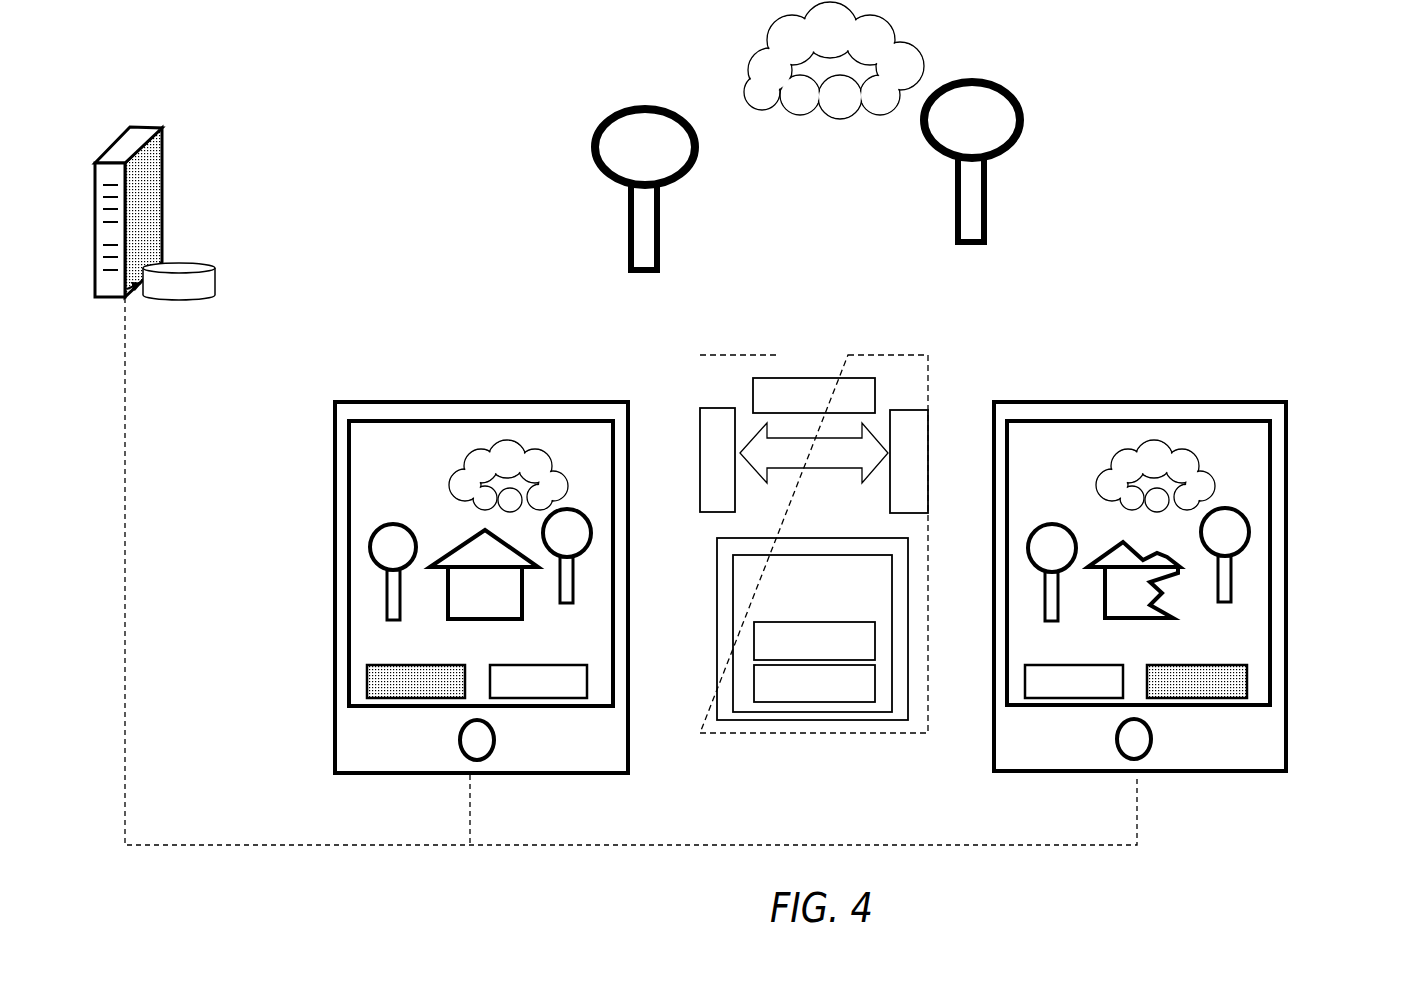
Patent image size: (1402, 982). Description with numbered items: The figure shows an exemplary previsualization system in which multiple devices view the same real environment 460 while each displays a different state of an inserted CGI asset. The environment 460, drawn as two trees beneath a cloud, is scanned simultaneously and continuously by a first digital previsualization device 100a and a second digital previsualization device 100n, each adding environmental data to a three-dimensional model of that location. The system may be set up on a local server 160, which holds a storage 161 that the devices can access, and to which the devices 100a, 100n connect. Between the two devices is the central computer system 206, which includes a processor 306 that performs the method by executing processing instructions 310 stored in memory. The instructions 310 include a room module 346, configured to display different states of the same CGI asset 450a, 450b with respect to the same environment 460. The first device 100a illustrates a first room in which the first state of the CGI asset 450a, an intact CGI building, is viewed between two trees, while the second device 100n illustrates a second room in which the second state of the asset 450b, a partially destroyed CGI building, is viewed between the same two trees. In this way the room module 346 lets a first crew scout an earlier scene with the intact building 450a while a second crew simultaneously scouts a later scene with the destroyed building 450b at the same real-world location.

The local server 160 is at (147, 171).
The storage 161 is at (179, 281).
The real environment 460 is at (640, 76).
The digital previsualization device 100a is at (453, 401).
The digital previsualization device 100n is at (1160, 401).
The CGI asset 450a is at (453, 552).
The CGI asset 450b is at (1180, 617).
The computer system 206 is at (814, 537).
The processor 306 is at (750, 380).
The processing instructions 310 is at (733, 590).
The room module 346 is at (787, 688).